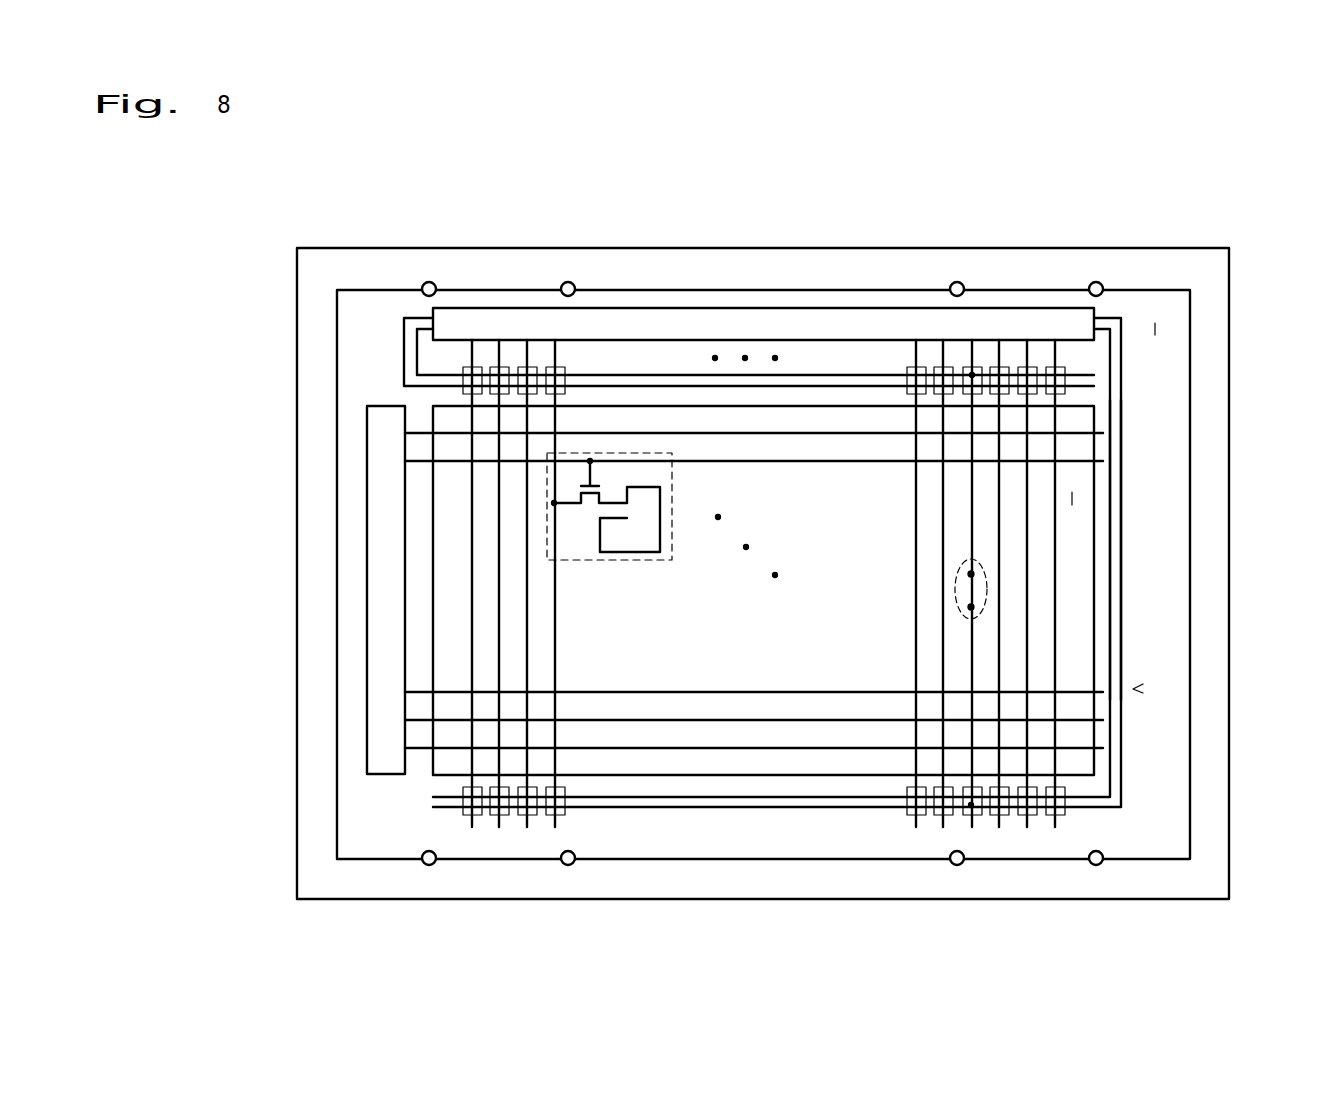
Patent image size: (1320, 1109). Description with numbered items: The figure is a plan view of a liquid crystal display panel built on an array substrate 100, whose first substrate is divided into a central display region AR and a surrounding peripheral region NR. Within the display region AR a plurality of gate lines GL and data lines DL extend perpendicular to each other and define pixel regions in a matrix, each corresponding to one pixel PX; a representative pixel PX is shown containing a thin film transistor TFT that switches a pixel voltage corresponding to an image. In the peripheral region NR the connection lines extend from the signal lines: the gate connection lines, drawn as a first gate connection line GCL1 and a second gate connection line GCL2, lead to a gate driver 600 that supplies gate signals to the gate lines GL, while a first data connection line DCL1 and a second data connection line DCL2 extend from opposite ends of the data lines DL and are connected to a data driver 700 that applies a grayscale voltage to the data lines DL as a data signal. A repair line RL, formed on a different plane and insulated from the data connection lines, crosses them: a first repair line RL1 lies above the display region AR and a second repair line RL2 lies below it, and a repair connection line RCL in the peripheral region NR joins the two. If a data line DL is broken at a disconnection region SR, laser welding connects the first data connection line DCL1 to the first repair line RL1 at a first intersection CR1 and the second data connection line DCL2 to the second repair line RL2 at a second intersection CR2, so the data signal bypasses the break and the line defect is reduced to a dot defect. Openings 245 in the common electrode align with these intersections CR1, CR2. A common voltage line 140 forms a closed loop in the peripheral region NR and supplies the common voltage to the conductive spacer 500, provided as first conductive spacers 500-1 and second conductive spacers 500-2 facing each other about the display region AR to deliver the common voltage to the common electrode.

The array substrate 100 is at (1240, 163).
The common voltage line 140 is at (1153, 288).
The peripheral region NR is at (1155, 330).
The conductive spacer 500 is at (566, 281).
The first conductive spacers 500-1 is at (429, 281).
The second conductive spacers 500-2 is at (429, 866).
The data driver 700 is at (810, 324).
The first data connection line DCL1 is at (470, 352).
The second data connection line DCL2 is at (465, 779).
The repair connection line RCL is at (1110, 609).
The gate driver 600 is at (383, 535).
The display region AR is at (1072, 498).
The gate lines GL is at (723, 720).
The first gate connection line GCL1 is at (413, 750).
The second gate connection line GCL2 is at (1100, 748).
The first repair line RL1 is at (636, 386).
The second repair line RL2 is at (636, 797).
The repair line RL is at (1133, 689).
The data lines DL is at (499, 629).
The openings 245 is at (1047, 367).
The first intersection CR1 is at (972, 375).
The second intersection CR2 is at (971, 805).
The pixel PX is at (605, 561).
The thin film transistor TFT is at (593, 489).
The disconnection region SR is at (953, 602).